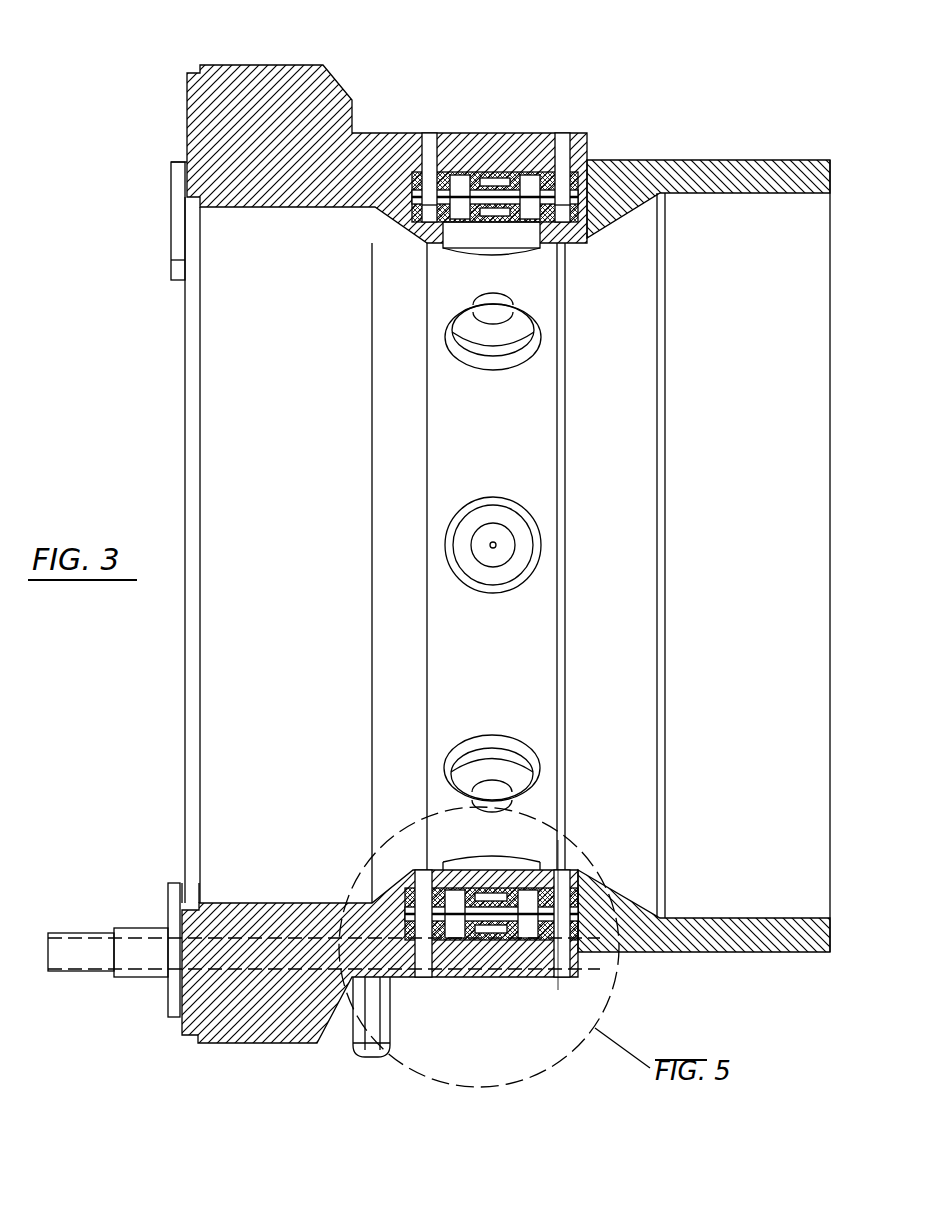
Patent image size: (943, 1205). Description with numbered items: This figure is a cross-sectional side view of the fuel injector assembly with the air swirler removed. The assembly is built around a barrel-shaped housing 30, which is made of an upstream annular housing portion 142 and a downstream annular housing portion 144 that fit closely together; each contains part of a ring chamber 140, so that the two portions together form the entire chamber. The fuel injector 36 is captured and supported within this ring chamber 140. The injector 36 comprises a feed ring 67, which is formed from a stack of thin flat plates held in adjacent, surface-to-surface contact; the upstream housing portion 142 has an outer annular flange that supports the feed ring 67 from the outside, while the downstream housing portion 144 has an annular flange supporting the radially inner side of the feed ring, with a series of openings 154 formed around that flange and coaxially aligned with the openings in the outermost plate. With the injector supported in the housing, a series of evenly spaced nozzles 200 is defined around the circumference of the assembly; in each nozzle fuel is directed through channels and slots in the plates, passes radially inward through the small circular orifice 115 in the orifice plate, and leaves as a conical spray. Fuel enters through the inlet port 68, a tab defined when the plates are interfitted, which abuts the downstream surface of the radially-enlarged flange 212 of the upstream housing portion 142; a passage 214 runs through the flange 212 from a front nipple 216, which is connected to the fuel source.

The barrel-shaped housing 30 is at (271, 53).
The upstream annular housing portion 142 is at (340, 85).
The feed ring 67 is at (475, 165).
The fuel injector 36 is at (505, 165).
The ring chamber 140 is at (595, 190).
The downstream annular housing portion 144 is at (720, 158).
The nozzles 200 is at (468, 252).
The openings 154 is at (535, 245).
The orifice 115 is at (493, 545).
The front nipple 216 is at (95, 975).
The radially-enlarged flange 212 is at (213, 1043).
The passage 214 is at (238, 1043).
The inlet port 68 is at (365, 1057).